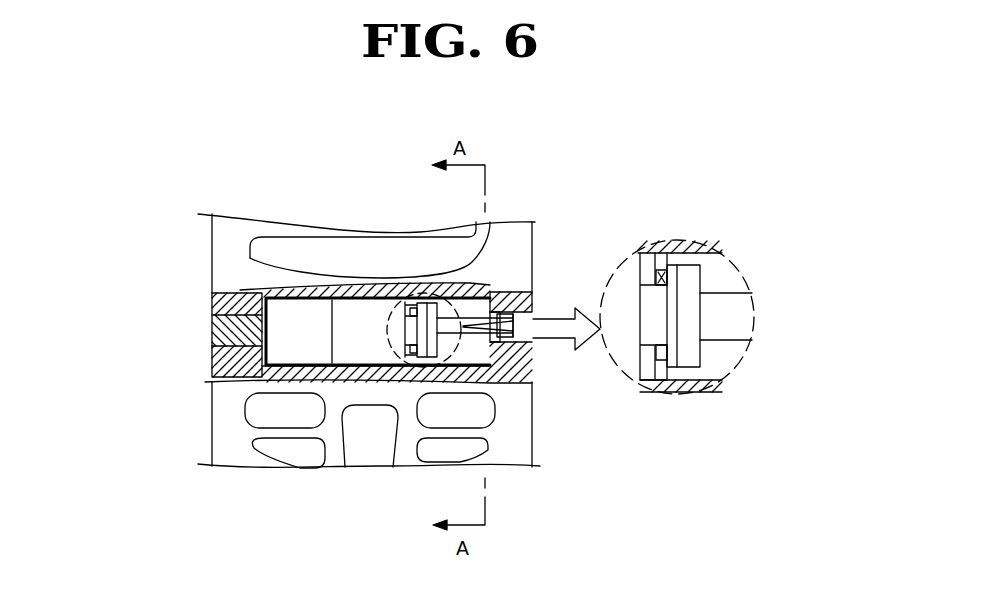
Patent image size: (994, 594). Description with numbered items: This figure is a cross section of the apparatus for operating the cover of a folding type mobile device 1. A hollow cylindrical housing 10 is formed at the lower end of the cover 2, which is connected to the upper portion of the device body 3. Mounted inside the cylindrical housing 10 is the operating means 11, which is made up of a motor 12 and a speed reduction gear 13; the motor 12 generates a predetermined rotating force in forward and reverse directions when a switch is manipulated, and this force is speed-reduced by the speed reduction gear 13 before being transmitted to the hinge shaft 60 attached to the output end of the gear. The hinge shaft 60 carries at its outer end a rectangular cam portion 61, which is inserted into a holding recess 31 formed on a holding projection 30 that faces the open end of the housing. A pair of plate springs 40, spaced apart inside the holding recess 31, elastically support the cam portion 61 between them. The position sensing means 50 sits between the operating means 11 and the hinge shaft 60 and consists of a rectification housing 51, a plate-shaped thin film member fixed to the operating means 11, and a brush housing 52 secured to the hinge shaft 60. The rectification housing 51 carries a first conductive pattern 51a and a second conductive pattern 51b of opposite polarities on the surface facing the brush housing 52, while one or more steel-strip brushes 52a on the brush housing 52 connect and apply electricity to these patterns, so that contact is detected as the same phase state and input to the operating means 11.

The mobile device 1 is at (576, 451).
The cover 2 is at (220, 252).
The device body 3 is at (220, 414).
The hollow cylindrical housing 10 is at (296, 290).
The operating means 11 is at (363, 288).
The motor 12 is at (288, 357).
The speed reduction gear 13 is at (363, 357).
The holding projection 30 is at (510, 302).
The holding recess 31 is at (516, 323).
The springs 40 is at (507, 347).
The position sensing means 50 is at (462, 302).
The rectification housing 51 is at (647, 262).
The first conductive pattern 51a is at (650, 380).
The second conductive pattern 51b is at (413, 349).
The brush housing 52 is at (678, 266).
The brush 52a is at (665, 270).
The hinge shaft 60 is at (668, 330).
The cam portion 61 is at (736, 297).